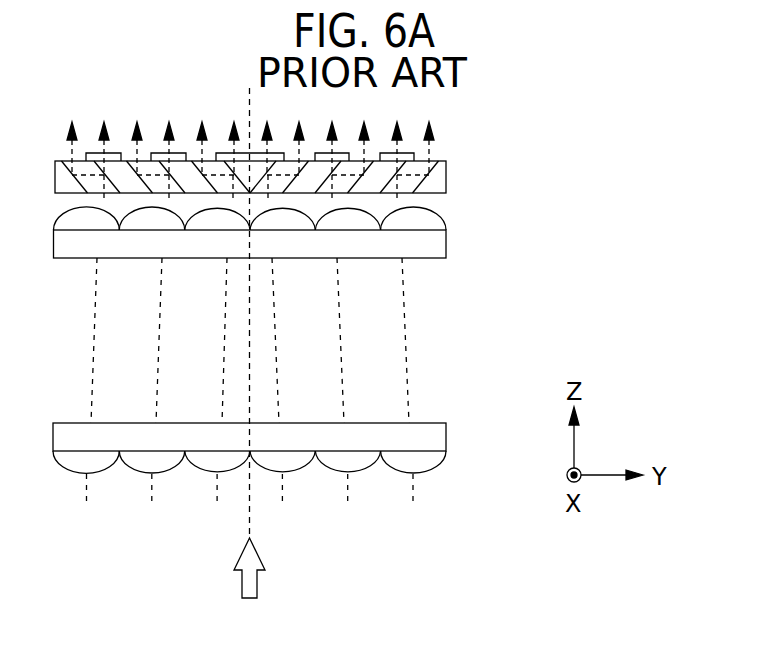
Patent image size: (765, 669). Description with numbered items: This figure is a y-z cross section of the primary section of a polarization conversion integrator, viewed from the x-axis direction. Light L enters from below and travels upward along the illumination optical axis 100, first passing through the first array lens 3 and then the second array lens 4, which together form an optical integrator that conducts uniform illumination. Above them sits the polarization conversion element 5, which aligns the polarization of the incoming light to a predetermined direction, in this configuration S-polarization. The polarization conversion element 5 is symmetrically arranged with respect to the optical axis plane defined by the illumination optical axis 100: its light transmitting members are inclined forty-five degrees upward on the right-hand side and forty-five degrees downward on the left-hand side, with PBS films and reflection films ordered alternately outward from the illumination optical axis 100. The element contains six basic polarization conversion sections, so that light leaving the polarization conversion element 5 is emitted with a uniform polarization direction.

The first array lens 3 is at (447, 452).
The second array lens 4 is at (447, 244).
The polarization conversion element 5 is at (447, 170).
The illumination optical axis 100 is at (250, 518).